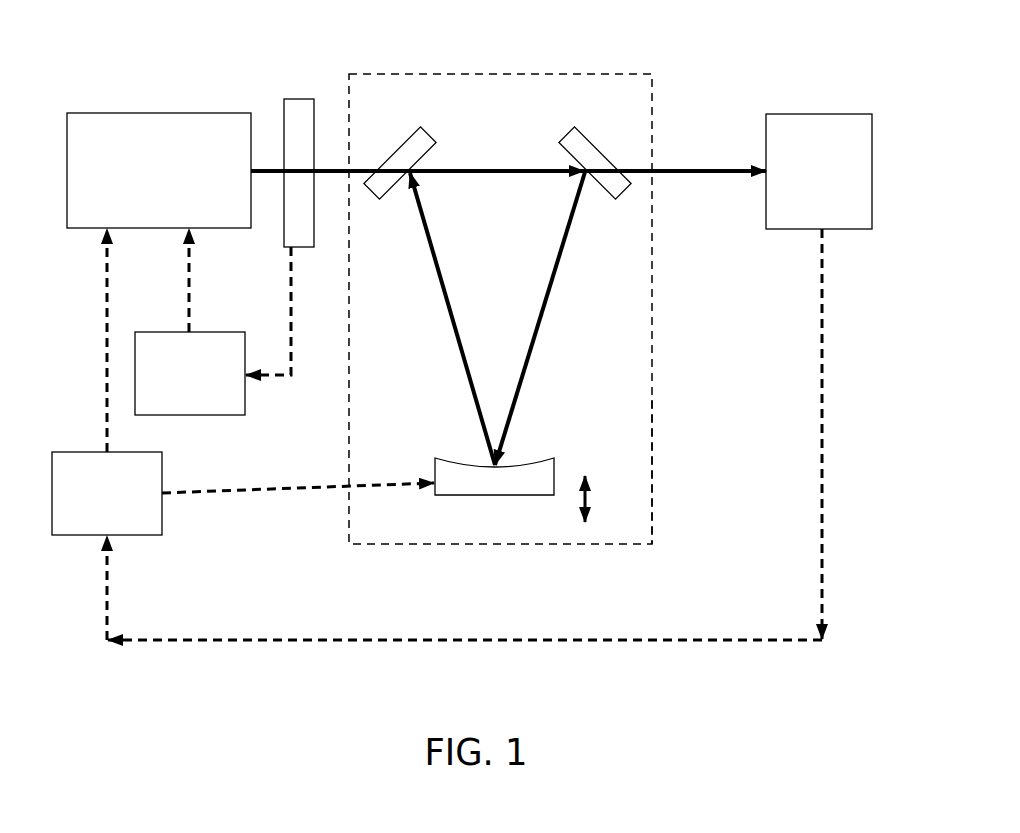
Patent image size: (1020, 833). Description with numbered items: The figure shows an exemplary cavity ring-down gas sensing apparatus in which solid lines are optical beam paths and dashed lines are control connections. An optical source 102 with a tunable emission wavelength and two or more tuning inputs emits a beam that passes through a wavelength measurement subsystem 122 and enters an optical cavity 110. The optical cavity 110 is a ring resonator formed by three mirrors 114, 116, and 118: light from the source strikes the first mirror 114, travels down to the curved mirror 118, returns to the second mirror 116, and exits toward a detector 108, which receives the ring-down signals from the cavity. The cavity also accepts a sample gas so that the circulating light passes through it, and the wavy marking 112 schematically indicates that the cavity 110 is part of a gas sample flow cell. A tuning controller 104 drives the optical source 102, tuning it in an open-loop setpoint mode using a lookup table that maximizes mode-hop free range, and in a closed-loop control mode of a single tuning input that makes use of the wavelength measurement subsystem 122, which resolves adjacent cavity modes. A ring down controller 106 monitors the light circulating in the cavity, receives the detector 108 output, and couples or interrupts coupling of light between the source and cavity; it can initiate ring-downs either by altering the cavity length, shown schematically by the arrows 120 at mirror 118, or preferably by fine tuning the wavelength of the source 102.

The optical source 102 is at (159, 170).
The tuning controller 104 is at (190, 373).
The ring down controller 106 is at (107, 493).
The detector 108 is at (819, 171).
The optical cavity 110 is at (597, 273).
The gas sample flow cell 112 is at (655, 462).
The mirror 114 is at (405, 152).
The mirror 116 is at (587, 147).
The mirror 118 is at (532, 482).
The arrows 120 is at (587, 507).
The wavelength measurement subsystem 122 is at (300, 110).